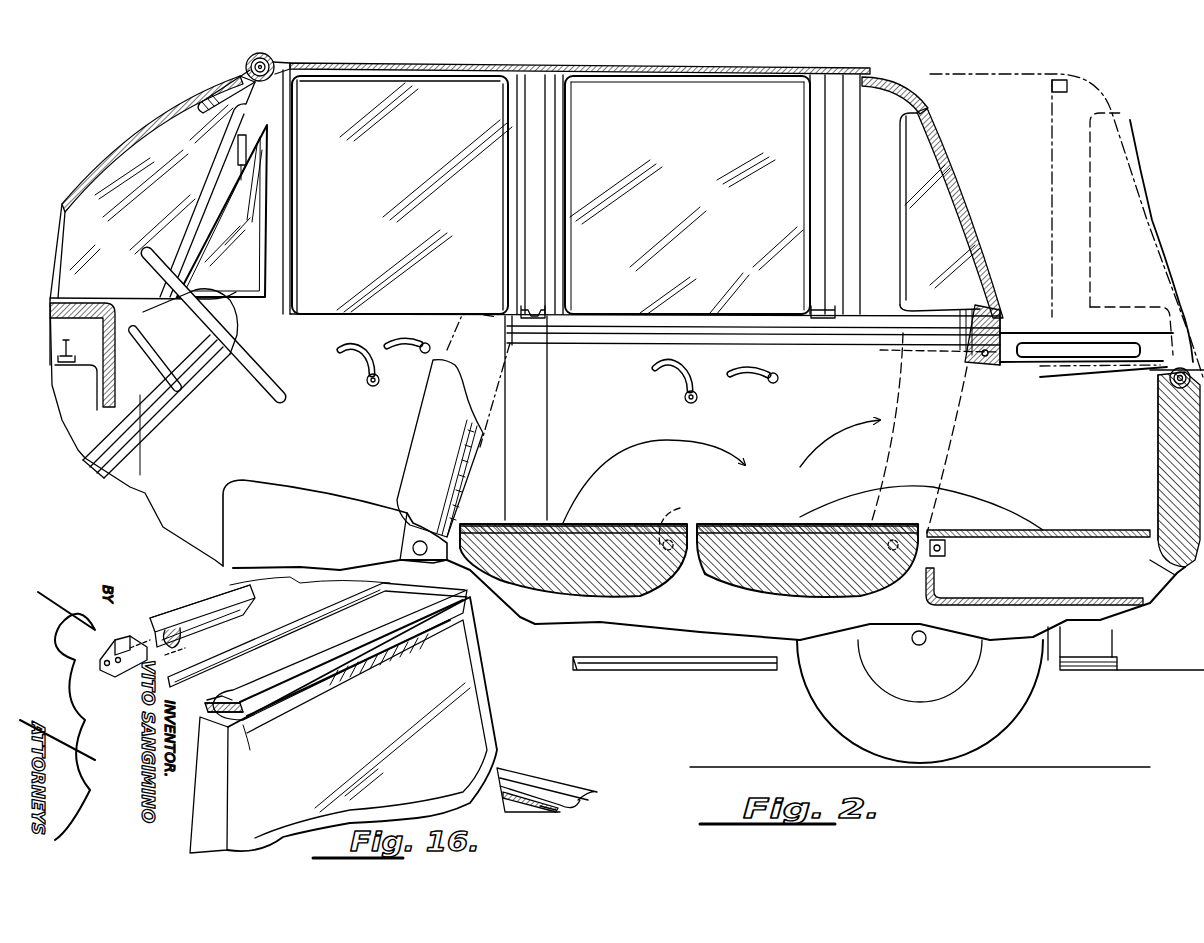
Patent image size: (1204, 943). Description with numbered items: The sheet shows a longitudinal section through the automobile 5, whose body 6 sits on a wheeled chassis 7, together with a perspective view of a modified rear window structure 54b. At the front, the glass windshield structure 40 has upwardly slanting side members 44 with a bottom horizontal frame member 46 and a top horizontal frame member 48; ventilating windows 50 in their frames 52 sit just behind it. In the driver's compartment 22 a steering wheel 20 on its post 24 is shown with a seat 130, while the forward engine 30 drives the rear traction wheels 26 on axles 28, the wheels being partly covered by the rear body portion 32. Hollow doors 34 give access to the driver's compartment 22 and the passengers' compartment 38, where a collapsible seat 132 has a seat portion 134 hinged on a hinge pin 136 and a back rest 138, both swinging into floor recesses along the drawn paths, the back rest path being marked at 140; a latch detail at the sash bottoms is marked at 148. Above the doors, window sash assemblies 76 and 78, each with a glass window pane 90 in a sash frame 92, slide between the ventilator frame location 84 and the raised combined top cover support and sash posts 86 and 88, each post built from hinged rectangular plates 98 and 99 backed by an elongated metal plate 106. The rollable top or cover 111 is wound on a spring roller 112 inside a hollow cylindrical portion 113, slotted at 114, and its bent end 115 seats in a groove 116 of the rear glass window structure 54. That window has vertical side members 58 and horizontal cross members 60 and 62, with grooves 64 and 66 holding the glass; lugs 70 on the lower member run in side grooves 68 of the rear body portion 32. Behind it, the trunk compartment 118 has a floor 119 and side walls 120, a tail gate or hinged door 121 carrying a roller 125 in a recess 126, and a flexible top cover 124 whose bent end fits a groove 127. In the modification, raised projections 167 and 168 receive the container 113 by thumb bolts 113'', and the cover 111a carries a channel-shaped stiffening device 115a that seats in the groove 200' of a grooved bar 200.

In FIG. 2, the automobile 5 is at (140, 132).
In FIG. 2, the body 6 is at (145, 500).
In FIG. 2, the wheeled chassis 7 is at (992, 600).
In FIG. 2, the steering wheel 20 is at (262, 393).
In FIG. 2, the driver's compartment 22 is at (320, 470).
In FIG. 2, the post 24 is at (145, 400).
In FIG. 2, the rear traction wheels 26 is at (1020, 705).
In FIG. 2, the axles 28 is at (916, 646).
In FIG. 2, the forward engine 30 is at (70, 392).
In FIG. 16, the rear body portion 32 is at (560, 792).
In FIG. 2, the hollow doors 34 is at (336, 426).
In FIG. 2, the passengers' compartment 38 is at (570, 422).
In FIG. 2, the glass windshield structure 40 is at (103, 160).
In FIG. 2, the upwardly slanting side members 44 is at (185, 204).
In FIG. 2, the bottom horizontal frame member 46 is at (110, 300).
In FIG. 2, the top horizontal frame member 48 is at (220, 77).
In FIG. 2, the ventilating windows 50 is at (238, 274).
In FIG. 2, the frames 52 is at (276, 180).
In FIG. 2, the rear glass window structure 54 is at (1113, 228).
In FIG. 16, the modified rear window structure 54b is at (500, 693).
In FIG. 2, the vertical side members 58 is at (888, 284).
In FIG. 2, the horizontal cross member 60 is at (930, 78).
In FIG. 2, the horizontal cross member 62 is at (1002, 322).
In FIG. 2, the groove 64 is at (915, 85).
In FIG. 2, the groove 66 is at (998, 314).
In FIG. 2, the side grooves 68 is at (612, 343).
In FIG. 16, the side grooves 68 is at (545, 812).
In FIG. 16, the lugs 70 is at (517, 812).
In FIG. 2, the window sash assembly 76 is at (503, 204).
In FIG. 2, the window sash assembly 78 is at (803, 214).
In FIG. 2, the sliding location at ventilator frame 84 is at (284, 228).
In FIG. 2, the raised combined top cover support and sash post 86 is at (508, 258).
In FIG. 2, the raised combined top cover support and sash post 88 is at (803, 178).
In FIG. 2, the glass window pane 90 is at (402, 194).
In FIG. 2, the sash frame 92 is at (290, 152).
In FIG. 2, the rectangular plate 98 is at (552, 150).
In FIG. 2, the rectangular plate 99 is at (520, 160).
In FIG. 2, the elongated metal plate 106 is at (535, 128).
In FIG. 2, the top or cover 111 is at (660, 53).
In FIG. 16, the top cover 111a is at (420, 590).
In FIG. 2, the spring roller 112 is at (294, 52).
In FIG. 2, the hollow cylindrical portion 113 is at (240, 58).
In FIG. 16, the hollow cylindrical portion 113 is at (340, 655).
In FIG. 16, the thumb bolts 113'' is at (196, 705).
In FIG. 2, the slot 114 is at (297, 80).
In FIG. 2, the bent end 115 is at (880, 72).
In FIG. 16, the channel-shaped stiffening device 115a is at (190, 678).
In FIG. 2, the groove 116 is at (880, 104).
In FIG. 2, the trunk compartment 118 is at (1128, 508).
In FIG. 2, the floor 119 is at (1080, 531).
In FIG. 2, the side walls 120 is at (1063, 468).
In FIG. 2, the tail gate or hinged door 121 is at (1158, 470).
In FIG. 2, the top cover 124 is at (1040, 372).
In FIG. 2, the roller 125 is at (1170, 390).
In FIG. 2, the recess 126 is at (1172, 415).
In FIG. 2, the groove 127 is at (980, 356).
In FIG. 2, the seat 130 is at (352, 492).
In FIG. 2, the collapsible seat 132 is at (758, 462).
In FIG. 2, the seat portion 134 is at (828, 492).
In FIG. 2, the hinge pin 136 is at (681, 519).
In FIG. 2, the back rest 138 is at (940, 460).
In FIG. 2, the cushion folding path 140 is at (895, 535).
In FIG. 2, the window latch 148 is at (548, 312).
In FIG. 16, the side end raised projection 167 is at (248, 740).
In FIG. 16, the side end raised projection 168 is at (472, 608).
In FIG. 16, the grooved bar 200 is at (127, 635).
In FIG. 16, the groove 200' is at (192, 615).